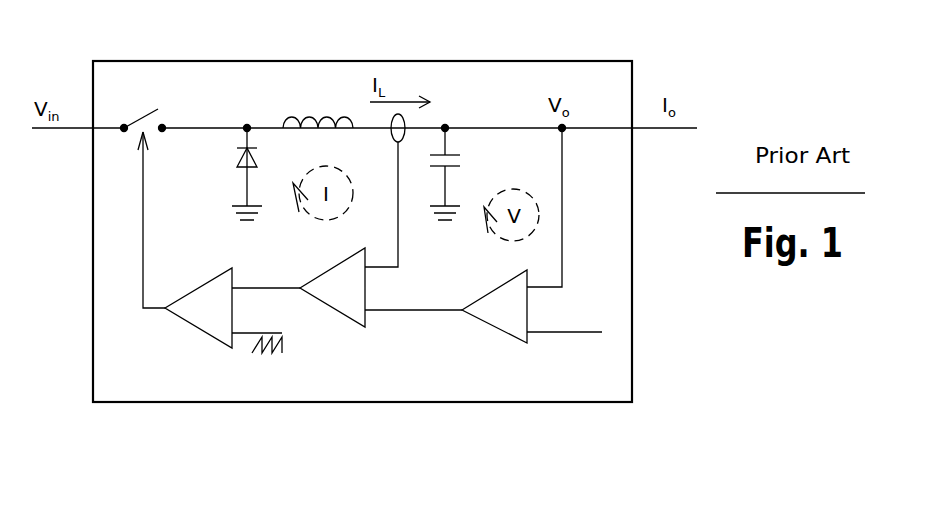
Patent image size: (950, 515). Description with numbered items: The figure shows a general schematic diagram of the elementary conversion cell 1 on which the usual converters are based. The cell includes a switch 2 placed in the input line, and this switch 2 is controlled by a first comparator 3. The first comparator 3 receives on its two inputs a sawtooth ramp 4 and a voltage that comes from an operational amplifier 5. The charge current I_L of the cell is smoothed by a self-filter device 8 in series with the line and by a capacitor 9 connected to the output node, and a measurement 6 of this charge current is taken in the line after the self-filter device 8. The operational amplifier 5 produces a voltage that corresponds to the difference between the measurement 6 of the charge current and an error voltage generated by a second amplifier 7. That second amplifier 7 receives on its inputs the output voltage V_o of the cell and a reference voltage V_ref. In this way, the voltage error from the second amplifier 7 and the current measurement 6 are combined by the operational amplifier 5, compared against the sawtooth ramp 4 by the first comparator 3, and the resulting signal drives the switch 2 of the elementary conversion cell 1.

The elementary conversion cell 1 is at (430, 402).
The switch 2 is at (139, 120).
The first comparator 3 is at (198, 303).
The sawtooth ramp 4 is at (281, 353).
The operational amplifier 5 is at (352, 322).
The measurement of the charge current 6 is at (389, 138).
The second amplifier 7 is at (500, 337).
The self-filter device 8 is at (330, 106).
The capacitor 9 is at (464, 161).